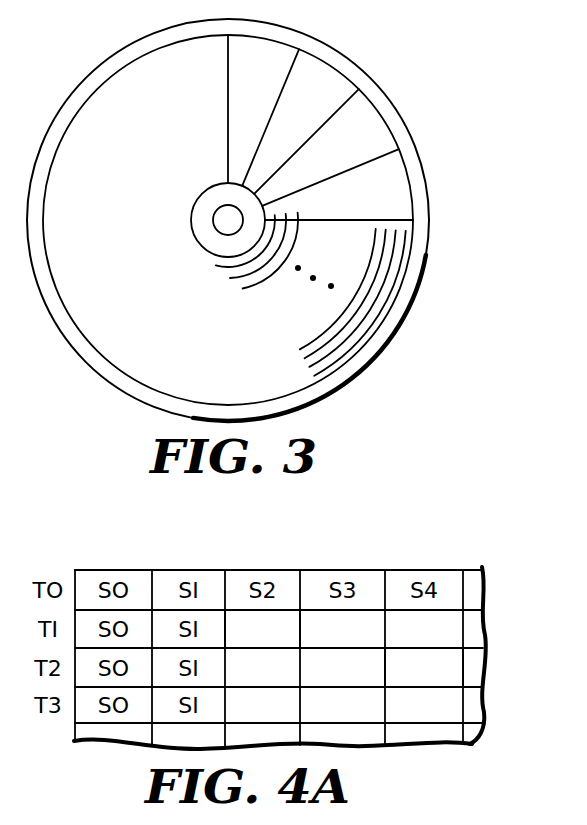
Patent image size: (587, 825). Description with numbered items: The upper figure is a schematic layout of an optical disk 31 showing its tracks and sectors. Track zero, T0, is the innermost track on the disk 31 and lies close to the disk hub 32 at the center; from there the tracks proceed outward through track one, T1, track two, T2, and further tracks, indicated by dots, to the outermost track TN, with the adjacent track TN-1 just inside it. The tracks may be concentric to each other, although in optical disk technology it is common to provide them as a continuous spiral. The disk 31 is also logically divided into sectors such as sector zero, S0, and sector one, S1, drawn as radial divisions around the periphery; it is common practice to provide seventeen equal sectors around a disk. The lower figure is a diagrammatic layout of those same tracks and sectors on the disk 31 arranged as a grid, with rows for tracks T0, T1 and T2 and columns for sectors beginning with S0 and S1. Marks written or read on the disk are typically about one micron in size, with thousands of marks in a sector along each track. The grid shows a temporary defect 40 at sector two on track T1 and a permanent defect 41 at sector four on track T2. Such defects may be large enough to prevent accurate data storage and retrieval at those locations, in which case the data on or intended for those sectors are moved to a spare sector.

In FIG. 3, the optical disk 31 is at (114, 342).
In FIG. 3, the disk hub 32 is at (207, 204).
In FIG. 4A, the temporary defect 40 is at (270, 624).
In FIG. 4A, the permanent defect 41 is at (431, 668).
In FIG. 3, the sector zero S0 is at (268, 52).
In FIG. 3, the sector one S1 is at (326, 83).
In FIG. 3, the track zero T0 is at (214, 267).
In FIG. 3, the track one T1 is at (230, 279).
In FIG. 3, the track two T2 is at (243, 289).
In FIG. 3, the outermost track TN is at (398, 242).
In FIG. 3, the next-to-outermost track TN-1 is at (396, 274).